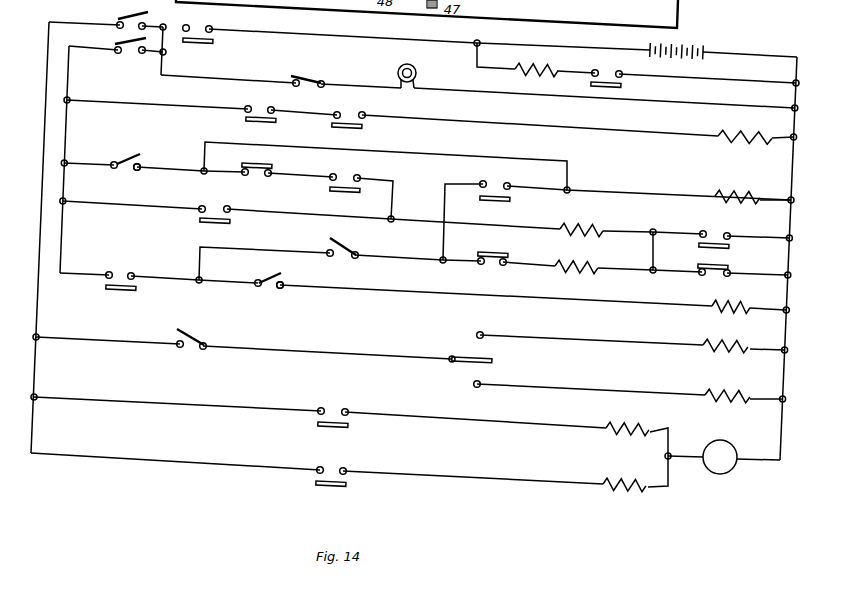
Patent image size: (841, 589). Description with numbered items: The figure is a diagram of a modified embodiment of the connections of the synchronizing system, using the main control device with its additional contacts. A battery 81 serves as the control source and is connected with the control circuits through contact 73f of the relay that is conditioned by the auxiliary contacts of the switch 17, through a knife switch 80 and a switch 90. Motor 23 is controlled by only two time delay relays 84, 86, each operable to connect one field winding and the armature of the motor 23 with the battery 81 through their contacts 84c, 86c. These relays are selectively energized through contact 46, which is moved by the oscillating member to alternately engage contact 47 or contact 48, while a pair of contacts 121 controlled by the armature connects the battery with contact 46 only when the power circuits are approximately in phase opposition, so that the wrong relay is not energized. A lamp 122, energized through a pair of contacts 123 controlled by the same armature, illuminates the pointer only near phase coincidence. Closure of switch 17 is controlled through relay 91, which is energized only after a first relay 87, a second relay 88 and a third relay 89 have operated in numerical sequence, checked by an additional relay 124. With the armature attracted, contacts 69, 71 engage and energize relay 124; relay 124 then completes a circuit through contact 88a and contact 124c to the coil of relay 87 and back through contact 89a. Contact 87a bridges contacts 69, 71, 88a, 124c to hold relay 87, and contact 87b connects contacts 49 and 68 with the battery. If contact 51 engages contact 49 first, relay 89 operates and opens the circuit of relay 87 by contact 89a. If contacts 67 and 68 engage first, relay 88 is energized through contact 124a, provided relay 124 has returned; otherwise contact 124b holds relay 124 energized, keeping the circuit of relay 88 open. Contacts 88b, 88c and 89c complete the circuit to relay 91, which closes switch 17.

The knife switch 80 is at (128, 16).
The contact of relay 73 73f is at (198, 43).
The switch 90 is at (130, 52).
The pair of contacts 123 is at (292, 77).
The lamp 122 is at (408, 66).
The switch 17 is at (524, 65).
The battery 81 is at (694, 46).
The relay 91 is at (624, 85).
The contact of relay 88 88c is at (248, 119).
The contact of relay 89 89c is at (364, 128).
The contact 69 is at (128, 157).
The contact 71 is at (140, 171).
The contact of relay 88 88a is at (250, 163).
The contact of relay 124 124c is at (345, 191).
The contact of relay 124 124b is at (494, 201).
The first relay 87 is at (582, 225).
The relay 124 is at (735, 192).
The contact of relay 87 87a is at (200, 224).
The contact of relay 88 88b is at (715, 233).
The contact of relay 124 124a is at (491, 252).
The second relay 88 is at (580, 262).
The contact of relay 89 89a is at (732, 269).
The contact of relay 87 87b is at (121, 291).
The contact 67 is at (347, 246).
The contact 68 is at (330, 257).
The contact 49 is at (270, 277).
The contact 51 is at (281, 289).
The third relay 89 is at (729, 302).
The pair of contacts 121 is at (178, 339).
The contact 47 is at (482, 331).
The contact 46 is at (494, 360).
The contact 48 is at (476, 388).
The time delay relay 86 is at (722, 340).
The time delay relay 84 is at (728, 390).
The contact of relay 84 84c is at (348, 428).
The contact of relay 86 86c is at (346, 487).
The motor 23 is at (624, 474).